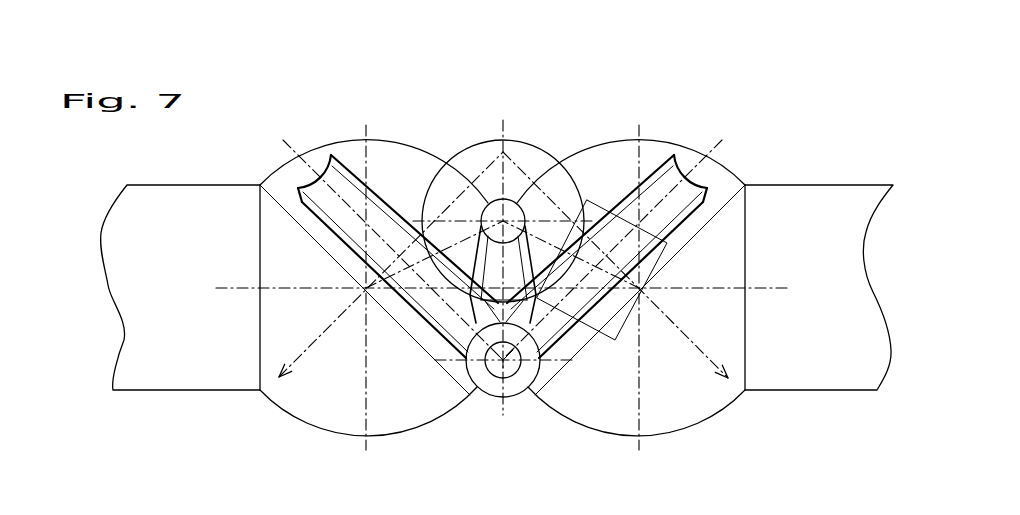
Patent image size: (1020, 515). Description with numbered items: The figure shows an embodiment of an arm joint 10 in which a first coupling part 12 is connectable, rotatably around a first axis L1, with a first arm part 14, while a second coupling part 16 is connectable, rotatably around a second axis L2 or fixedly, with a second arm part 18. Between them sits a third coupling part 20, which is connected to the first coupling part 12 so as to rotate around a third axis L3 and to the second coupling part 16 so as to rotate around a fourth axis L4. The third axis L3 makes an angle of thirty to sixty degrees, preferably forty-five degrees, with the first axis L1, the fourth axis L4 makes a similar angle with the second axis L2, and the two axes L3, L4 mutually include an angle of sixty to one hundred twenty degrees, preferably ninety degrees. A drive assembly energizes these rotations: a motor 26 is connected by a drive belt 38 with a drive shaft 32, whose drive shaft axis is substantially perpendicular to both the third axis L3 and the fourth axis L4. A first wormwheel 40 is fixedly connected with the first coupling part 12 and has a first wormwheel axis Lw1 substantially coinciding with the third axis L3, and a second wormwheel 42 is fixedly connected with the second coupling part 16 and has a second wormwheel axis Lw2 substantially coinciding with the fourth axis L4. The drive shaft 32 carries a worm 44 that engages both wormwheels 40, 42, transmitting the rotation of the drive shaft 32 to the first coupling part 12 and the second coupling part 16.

The arm joint 10 is at (529, 252).
The first coupling part 12 is at (340, 396).
The first arm part 14 is at (217, 345).
The second coupling part 16 is at (660, 380).
The second arm part 18 is at (814, 344).
The third coupling part 20 is at (401, 163).
The motor 26 is at (471, 165).
The drive shaft 32 is at (498, 372).
The drive belt 38 is at (528, 335).
The first wormwheel 40 is at (337, 174).
The second wormwheel 42 is at (690, 188).
The worm 44 is at (513, 385).
The first axis L1 is at (241, 288).
The second axis L2 is at (770, 288).
The third axis L3 is at (342, 292).
The fourth axis L4 is at (662, 296).
The first wormwheel axis Lw1 is at (280, 378).
The second wormwheel axis Lw2 is at (728, 380).